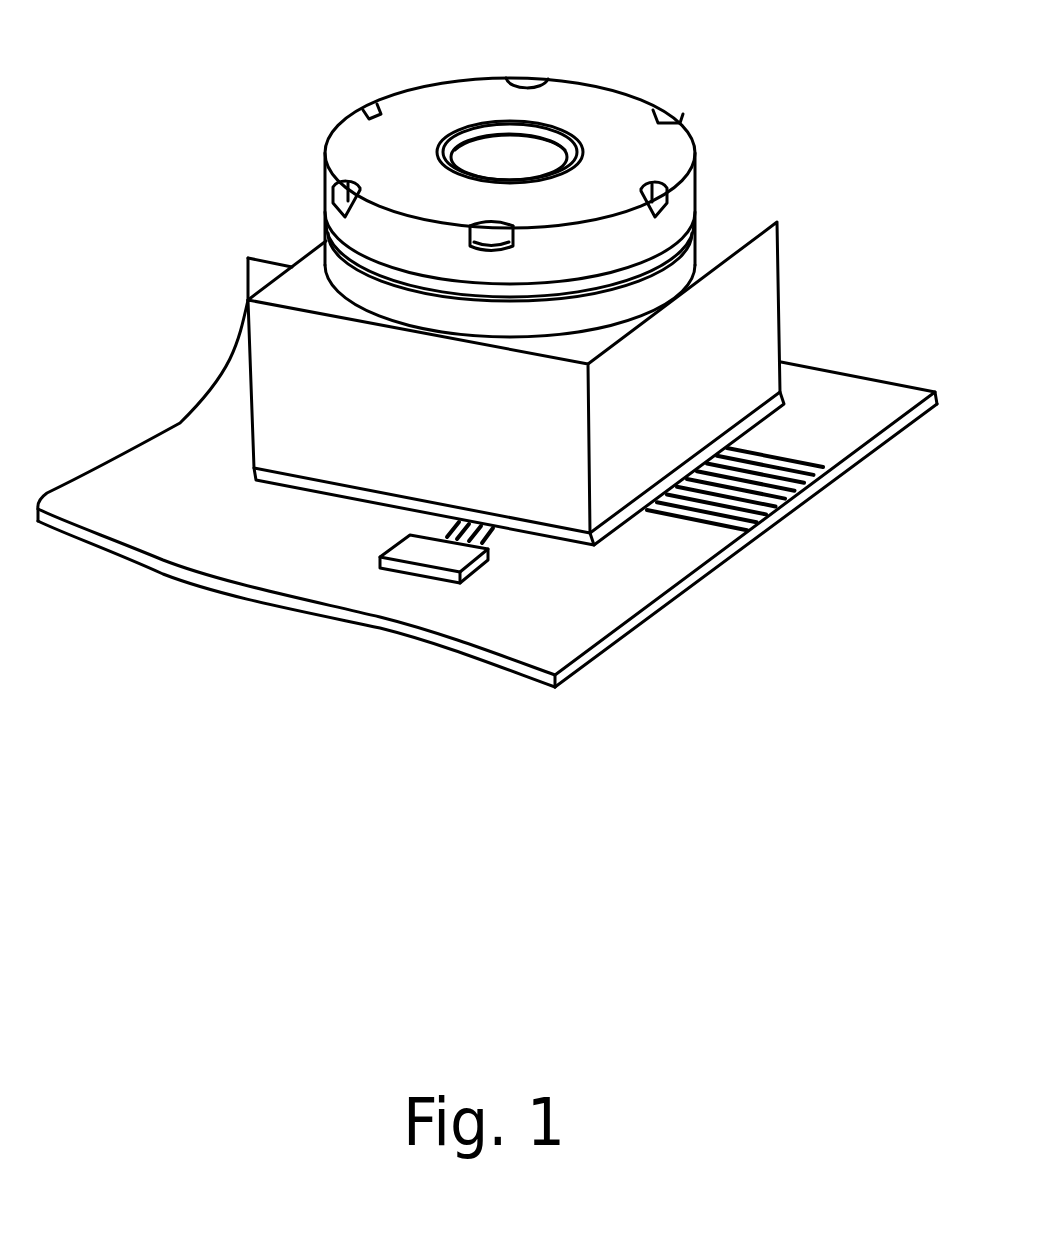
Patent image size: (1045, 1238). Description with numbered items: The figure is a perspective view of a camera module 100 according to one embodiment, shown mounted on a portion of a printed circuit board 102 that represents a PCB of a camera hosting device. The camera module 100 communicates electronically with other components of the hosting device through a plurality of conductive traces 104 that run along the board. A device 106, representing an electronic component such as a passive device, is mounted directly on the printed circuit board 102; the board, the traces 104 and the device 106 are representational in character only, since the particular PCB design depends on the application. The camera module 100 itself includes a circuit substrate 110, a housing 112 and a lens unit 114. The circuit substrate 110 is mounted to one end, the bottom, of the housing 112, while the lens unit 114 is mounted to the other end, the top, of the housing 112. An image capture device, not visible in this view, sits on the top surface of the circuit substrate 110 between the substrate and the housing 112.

The camera module 100 is at (743, 77).
The printed circuit board 102 is at (127, 472).
The conductive traces 104 is at (787, 457).
The device 106 is at (455, 562).
The circuit substrate 110 is at (317, 487).
The housing 112 is at (767, 275).
The lens unit 114 is at (607, 105).